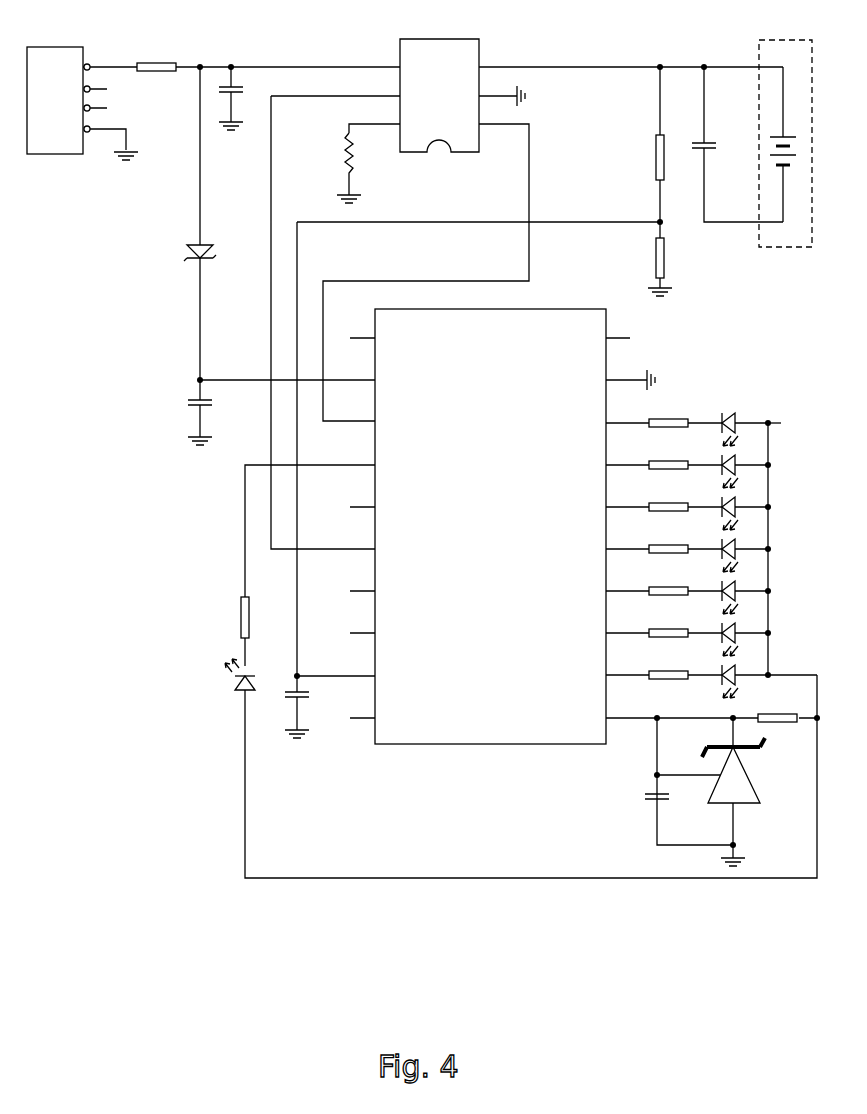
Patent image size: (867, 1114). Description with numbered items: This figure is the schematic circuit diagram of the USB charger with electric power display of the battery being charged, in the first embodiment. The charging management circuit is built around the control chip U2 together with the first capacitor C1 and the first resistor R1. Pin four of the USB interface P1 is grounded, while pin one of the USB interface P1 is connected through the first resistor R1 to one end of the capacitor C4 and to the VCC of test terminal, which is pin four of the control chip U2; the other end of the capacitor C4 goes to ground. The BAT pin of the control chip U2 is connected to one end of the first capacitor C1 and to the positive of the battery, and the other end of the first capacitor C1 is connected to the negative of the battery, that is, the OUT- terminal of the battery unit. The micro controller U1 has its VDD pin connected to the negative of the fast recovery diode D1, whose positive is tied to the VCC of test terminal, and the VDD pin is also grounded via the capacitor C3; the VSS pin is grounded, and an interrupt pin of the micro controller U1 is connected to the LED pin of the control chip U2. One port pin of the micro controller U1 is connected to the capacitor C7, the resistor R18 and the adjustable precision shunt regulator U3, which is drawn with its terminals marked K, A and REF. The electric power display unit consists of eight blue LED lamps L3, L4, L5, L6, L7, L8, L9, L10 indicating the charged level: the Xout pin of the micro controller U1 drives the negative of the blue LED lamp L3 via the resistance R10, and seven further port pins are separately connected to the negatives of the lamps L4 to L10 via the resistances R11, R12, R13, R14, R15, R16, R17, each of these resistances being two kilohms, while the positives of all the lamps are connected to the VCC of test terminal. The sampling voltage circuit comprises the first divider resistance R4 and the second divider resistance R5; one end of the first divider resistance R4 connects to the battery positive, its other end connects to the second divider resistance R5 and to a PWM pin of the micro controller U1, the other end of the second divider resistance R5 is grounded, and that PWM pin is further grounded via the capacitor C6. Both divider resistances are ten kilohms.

The USB interface P1 is at (82, 93).
The first resistor R1 is at (156, 57).
The VCC of test terminal VCC is at (515, 238).
The capacitor C4 is at (239, 98).
The control chip U2 is at (431, 109).
The first divider resistance R4 is at (646, 144).
The second divider resistance R5 is at (650, 259).
The first capacitor C1 is at (737, 144).
The OUT− terminal OUT- is at (726, 241).
The fast recovery diode D1 is at (212, 256).
The capacitor C3 is at (210, 412).
The micro controller U1 is at (499, 526).
The resistance R10 is at (264, 617).
The blue LED lamp L3 is at (251, 677).
The capacitor C6 is at (309, 707).
The resistance R11 is at (668, 665).
The resistance R12 is at (668, 623).
The resistance R13 is at (668, 581).
The resistance R14 is at (668, 539).
The resistance R15 is at (668, 497).
The resistance R16 is at (668, 455).
The resistance R17 is at (668, 413).
The resistor R18 is at (777, 708).
The blue LED lamp L4 is at (740, 674).
The blue LED lamp L5 is at (740, 632).
The blue LED lamp L6 is at (740, 590).
The blue LED lamp L7 is at (740, 548).
The blue LED lamp L8 is at (740, 506).
The blue LED lamp L9 is at (740, 464).
The blue LED lamp L10 is at (744, 422).
The adjustable precision shunt regulator U3 is at (739, 792).
The cathode K is at (711, 737).
The anode A is at (747, 823).
The reference terminal REF is at (669, 775).
The capacitor C7 is at (667, 800).